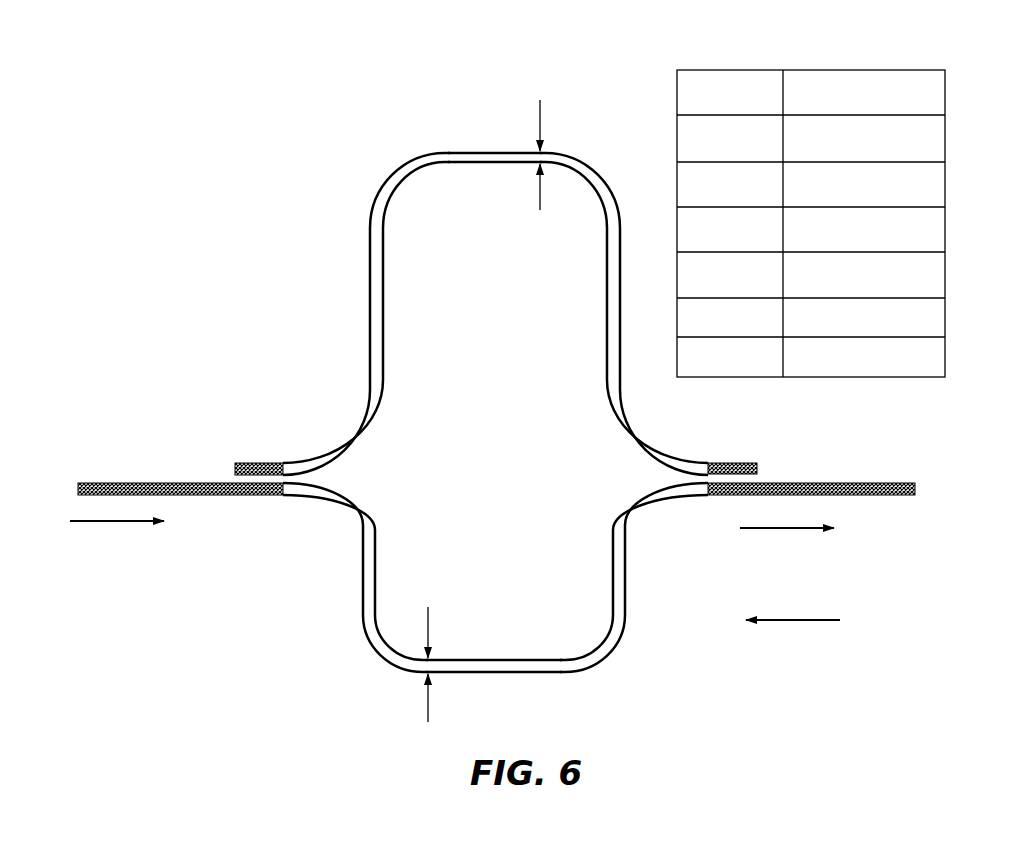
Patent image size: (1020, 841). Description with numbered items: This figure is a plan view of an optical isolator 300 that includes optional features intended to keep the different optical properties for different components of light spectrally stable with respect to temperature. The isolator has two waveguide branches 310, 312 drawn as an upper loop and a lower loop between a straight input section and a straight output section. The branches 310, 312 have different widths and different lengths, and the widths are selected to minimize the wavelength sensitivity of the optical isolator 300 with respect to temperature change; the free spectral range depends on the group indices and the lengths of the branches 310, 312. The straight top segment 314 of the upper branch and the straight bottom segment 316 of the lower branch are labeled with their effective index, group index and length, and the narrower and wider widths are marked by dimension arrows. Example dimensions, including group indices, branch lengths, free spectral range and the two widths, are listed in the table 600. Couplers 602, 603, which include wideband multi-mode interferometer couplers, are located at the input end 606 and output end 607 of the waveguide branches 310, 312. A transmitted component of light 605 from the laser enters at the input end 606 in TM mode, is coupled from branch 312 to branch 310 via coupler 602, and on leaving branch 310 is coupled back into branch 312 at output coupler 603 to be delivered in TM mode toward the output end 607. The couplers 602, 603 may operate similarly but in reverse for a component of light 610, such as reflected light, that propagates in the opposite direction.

The optical isolator 300 is at (205, 158).
The branch 310 is at (335, 268).
The branch 312 is at (325, 577).
The first waveguide segment 314 is at (480, 163).
The second waveguide segment 316 is at (500, 664).
The table 600 is at (712, 68).
The coupler 602 is at (244, 438).
The coupler 603 is at (725, 458).
The transmitted component of light 605 is at (75, 522).
The input end 606 is at (210, 458).
The output end 607 is at (802, 466).
The component of light 610 is at (790, 622).